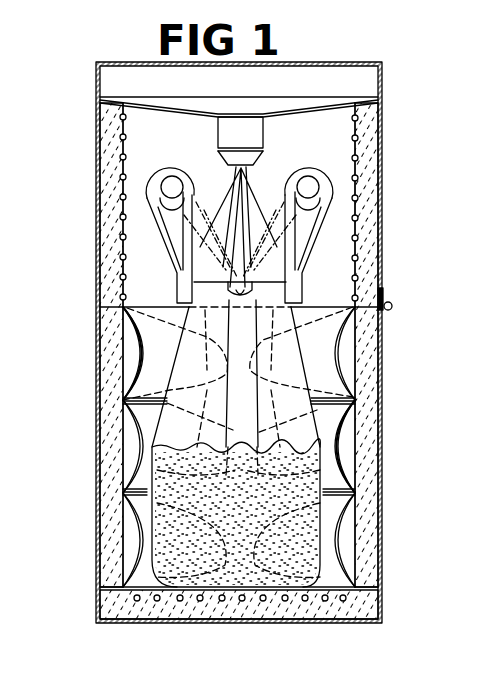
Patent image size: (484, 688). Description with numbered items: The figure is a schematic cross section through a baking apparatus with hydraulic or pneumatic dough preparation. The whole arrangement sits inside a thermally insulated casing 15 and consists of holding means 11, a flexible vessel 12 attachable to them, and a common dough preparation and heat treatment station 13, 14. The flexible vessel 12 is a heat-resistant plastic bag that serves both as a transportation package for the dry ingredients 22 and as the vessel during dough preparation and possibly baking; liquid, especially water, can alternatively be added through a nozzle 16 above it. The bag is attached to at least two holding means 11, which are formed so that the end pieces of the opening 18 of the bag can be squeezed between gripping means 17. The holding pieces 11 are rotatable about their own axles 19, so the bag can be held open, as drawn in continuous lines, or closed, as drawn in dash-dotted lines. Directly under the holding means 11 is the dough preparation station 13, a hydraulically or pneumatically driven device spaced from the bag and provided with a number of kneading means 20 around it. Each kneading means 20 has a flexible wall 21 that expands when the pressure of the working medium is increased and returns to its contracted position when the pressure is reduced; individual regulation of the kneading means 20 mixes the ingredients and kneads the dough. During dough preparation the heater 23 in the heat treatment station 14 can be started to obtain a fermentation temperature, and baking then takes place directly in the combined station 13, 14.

The holding means 11 is at (148, 181).
The flexible vessel 12 is at (304, 369).
The dough preparation station 13 is at (345, 390).
The heat treatment station 14 is at (155, 355).
The thermally insulated casing 15 is at (97, 453).
The nozzle 16 is at (247, 138).
The gripping means 17 is at (185, 265).
The opening 18 is at (205, 296).
The axles 19 is at (170, 184).
The kneading means 20 is at (112, 332).
The flexible wall 21 is at (343, 513).
The dry ingredients 22 is at (280, 567).
The heater 23 is at (121, 217).